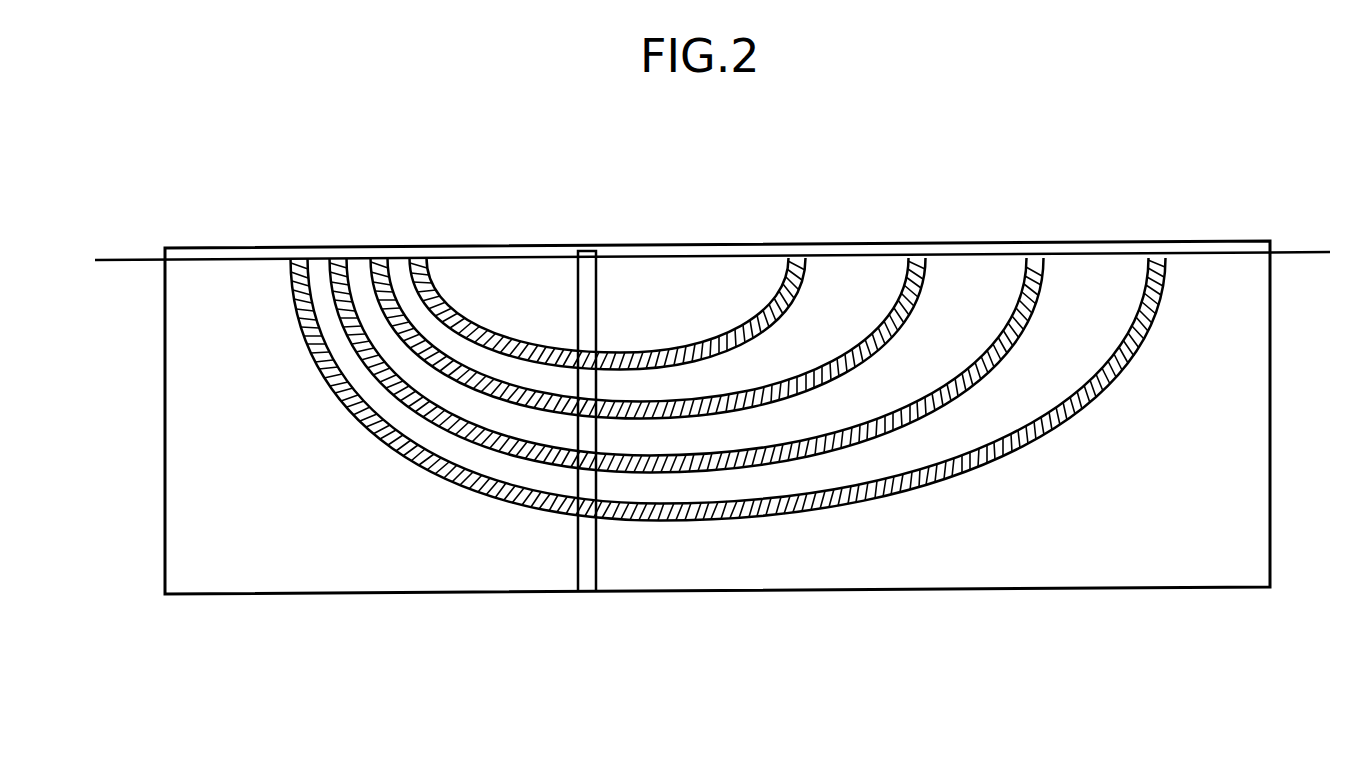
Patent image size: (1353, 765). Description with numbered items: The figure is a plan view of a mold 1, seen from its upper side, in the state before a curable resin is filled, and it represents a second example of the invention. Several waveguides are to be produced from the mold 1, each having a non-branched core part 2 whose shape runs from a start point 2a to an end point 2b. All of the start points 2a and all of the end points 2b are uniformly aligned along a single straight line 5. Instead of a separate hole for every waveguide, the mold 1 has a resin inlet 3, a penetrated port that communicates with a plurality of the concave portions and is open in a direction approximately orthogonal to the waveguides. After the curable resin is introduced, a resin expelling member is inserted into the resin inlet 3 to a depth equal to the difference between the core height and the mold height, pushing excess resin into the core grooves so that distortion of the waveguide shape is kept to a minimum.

The mold 1 is at (305, 582).
The core part 2 is at (442, 460).
The start point 2a is at (423, 236).
The end point 2b is at (1170, 238).
The resin inlet 3 is at (588, 584).
The single straight line 5 is at (1305, 252).